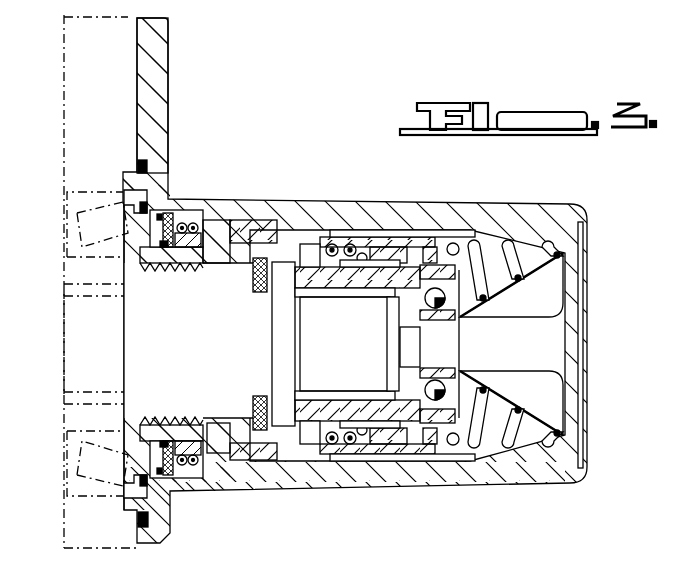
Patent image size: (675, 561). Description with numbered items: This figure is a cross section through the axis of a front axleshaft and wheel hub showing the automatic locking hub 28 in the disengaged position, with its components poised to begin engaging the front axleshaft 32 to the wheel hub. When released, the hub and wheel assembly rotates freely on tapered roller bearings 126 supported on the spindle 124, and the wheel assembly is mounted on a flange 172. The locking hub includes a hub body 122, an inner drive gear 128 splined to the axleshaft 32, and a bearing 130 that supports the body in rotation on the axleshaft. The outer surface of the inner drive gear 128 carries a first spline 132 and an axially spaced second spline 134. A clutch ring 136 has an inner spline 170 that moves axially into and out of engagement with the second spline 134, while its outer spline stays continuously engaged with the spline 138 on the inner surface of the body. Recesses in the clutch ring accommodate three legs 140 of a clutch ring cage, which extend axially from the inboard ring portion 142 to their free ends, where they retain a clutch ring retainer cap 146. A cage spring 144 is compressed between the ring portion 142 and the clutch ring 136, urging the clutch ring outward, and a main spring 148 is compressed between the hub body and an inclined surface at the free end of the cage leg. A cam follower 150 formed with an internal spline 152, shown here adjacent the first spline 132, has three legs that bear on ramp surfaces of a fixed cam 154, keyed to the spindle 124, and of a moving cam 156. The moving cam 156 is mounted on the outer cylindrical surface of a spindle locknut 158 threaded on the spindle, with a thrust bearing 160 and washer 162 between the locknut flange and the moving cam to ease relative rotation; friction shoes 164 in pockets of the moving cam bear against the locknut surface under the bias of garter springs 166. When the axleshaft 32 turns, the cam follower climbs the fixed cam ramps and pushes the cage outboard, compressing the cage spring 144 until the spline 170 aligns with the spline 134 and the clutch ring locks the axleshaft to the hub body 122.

The automatic locking hub 28 is at (273, 141).
The front axleshaft 32 is at (70, 298).
The hub body 122 is at (555, 225).
The spindle 124 is at (67, 270).
The tapered roller bearings 126 is at (93, 185).
The inner drive gear 128 is at (311, 406).
The bearing 130 is at (505, 306).
The first spline 132 is at (318, 467).
The second spline 134 is at (461, 448).
The clutch ring 136 is at (372, 478).
The spline 138 is at (486, 238).
The legs of clutch ring cage 140 is at (360, 248).
The inboard ring portion of clutch ring cage 142 is at (328, 238).
The cage spring 144 is at (396, 248).
The clutch ring retainer cap 146 is at (440, 228).
The main spring 148 is at (523, 440).
The cam follower 150 is at (261, 232).
The internal spline 152 is at (283, 465).
The fixed cam 154 is at (216, 232).
The moving cam 156 is at (212, 467).
The spindle locknut 158 is at (178, 196).
The thrust bearing 160 is at (140, 418).
The washer 162 is at (178, 420).
The friction shoes 164 is at (183, 270).
The garter springs 166 is at (181, 482).
The inner spline of clutch ring 170 is at (383, 398).
The flange 172 is at (158, 50).